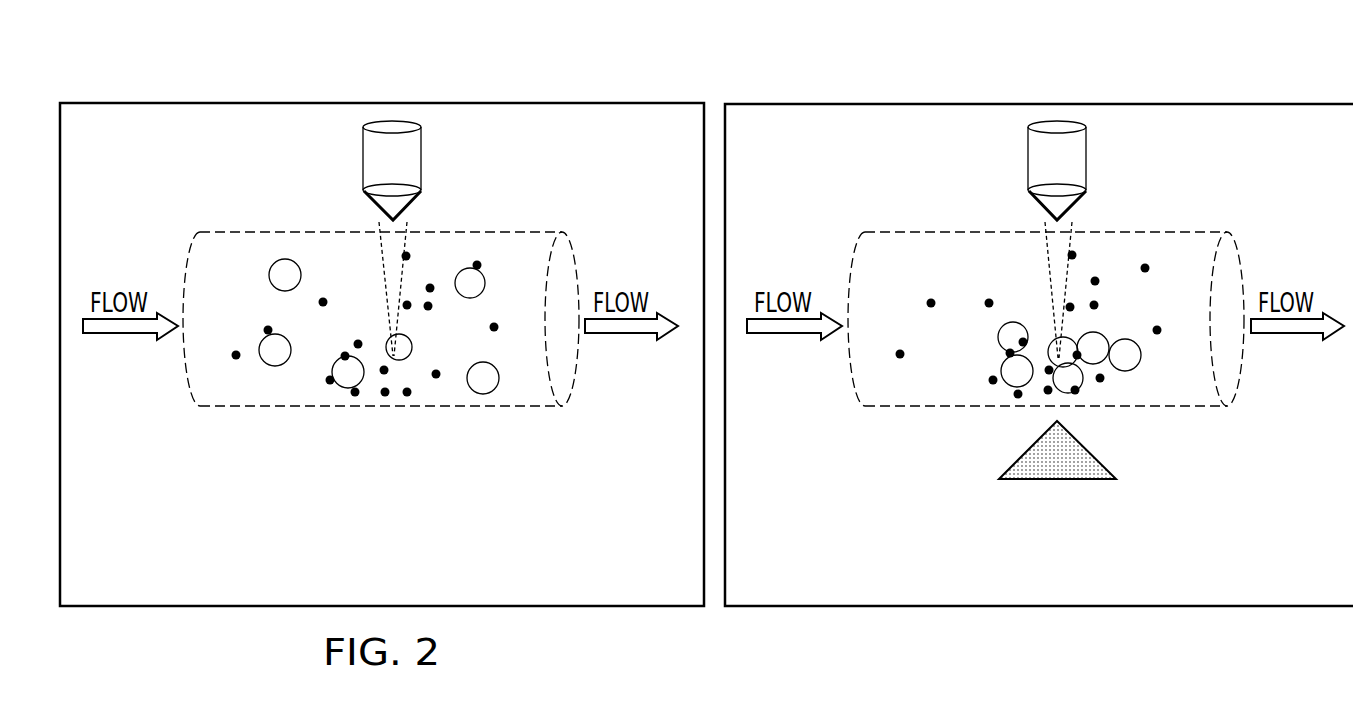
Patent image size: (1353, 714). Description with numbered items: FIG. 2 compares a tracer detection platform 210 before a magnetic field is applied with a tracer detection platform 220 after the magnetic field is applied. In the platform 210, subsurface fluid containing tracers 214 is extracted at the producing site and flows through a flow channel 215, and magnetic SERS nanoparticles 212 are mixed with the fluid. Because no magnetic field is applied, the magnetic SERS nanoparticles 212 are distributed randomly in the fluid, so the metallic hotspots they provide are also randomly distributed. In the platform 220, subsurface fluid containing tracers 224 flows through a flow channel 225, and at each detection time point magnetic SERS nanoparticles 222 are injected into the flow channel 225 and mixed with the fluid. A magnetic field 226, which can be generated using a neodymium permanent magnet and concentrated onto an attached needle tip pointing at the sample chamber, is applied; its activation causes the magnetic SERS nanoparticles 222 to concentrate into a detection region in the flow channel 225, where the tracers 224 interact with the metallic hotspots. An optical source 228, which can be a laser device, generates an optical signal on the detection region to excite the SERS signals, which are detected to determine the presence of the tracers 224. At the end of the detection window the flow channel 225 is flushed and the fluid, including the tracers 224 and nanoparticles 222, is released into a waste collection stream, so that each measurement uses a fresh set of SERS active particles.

The tracer detection platform 210 is at (270, 104).
The magnetic SERS nanoparticles 212 is at (291, 258).
The tracers 214 is at (234, 351).
The flow channel 215 is at (232, 231).
The tracer detection platform 220 is at (1163, 104).
The magnetic SERS nanoparticles 222 is at (1010, 322).
The tracers 224 is at (898, 350).
The flow channel 225 is at (895, 231).
The magnetic field 226 is at (1057, 483).
The optical source 228 is at (1105, 155).